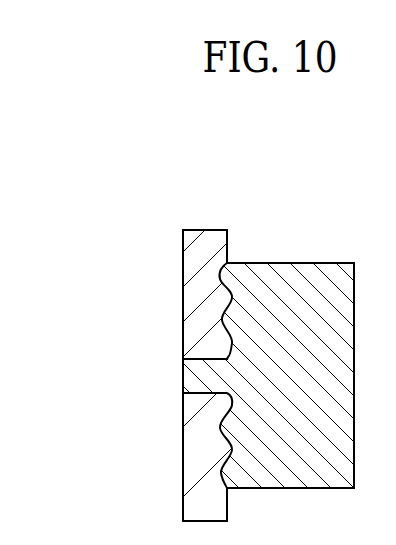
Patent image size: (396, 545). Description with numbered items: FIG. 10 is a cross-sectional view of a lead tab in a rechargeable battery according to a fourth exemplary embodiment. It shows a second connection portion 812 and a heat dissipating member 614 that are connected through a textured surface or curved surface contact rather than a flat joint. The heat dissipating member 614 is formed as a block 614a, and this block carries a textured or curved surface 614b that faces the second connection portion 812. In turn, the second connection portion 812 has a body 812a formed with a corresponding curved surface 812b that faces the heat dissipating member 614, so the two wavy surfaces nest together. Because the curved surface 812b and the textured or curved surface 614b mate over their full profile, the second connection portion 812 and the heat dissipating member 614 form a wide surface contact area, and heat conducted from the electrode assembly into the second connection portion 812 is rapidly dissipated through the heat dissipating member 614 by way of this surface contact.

The heat dissipating member 614 is at (370, 183).
The block 614a is at (322, 277).
The textured or curved surface 614b is at (225, 275).
The second connection portion 812 is at (73, 288).
The body 812a is at (197, 337).
The curved surface 812b is at (230, 298).